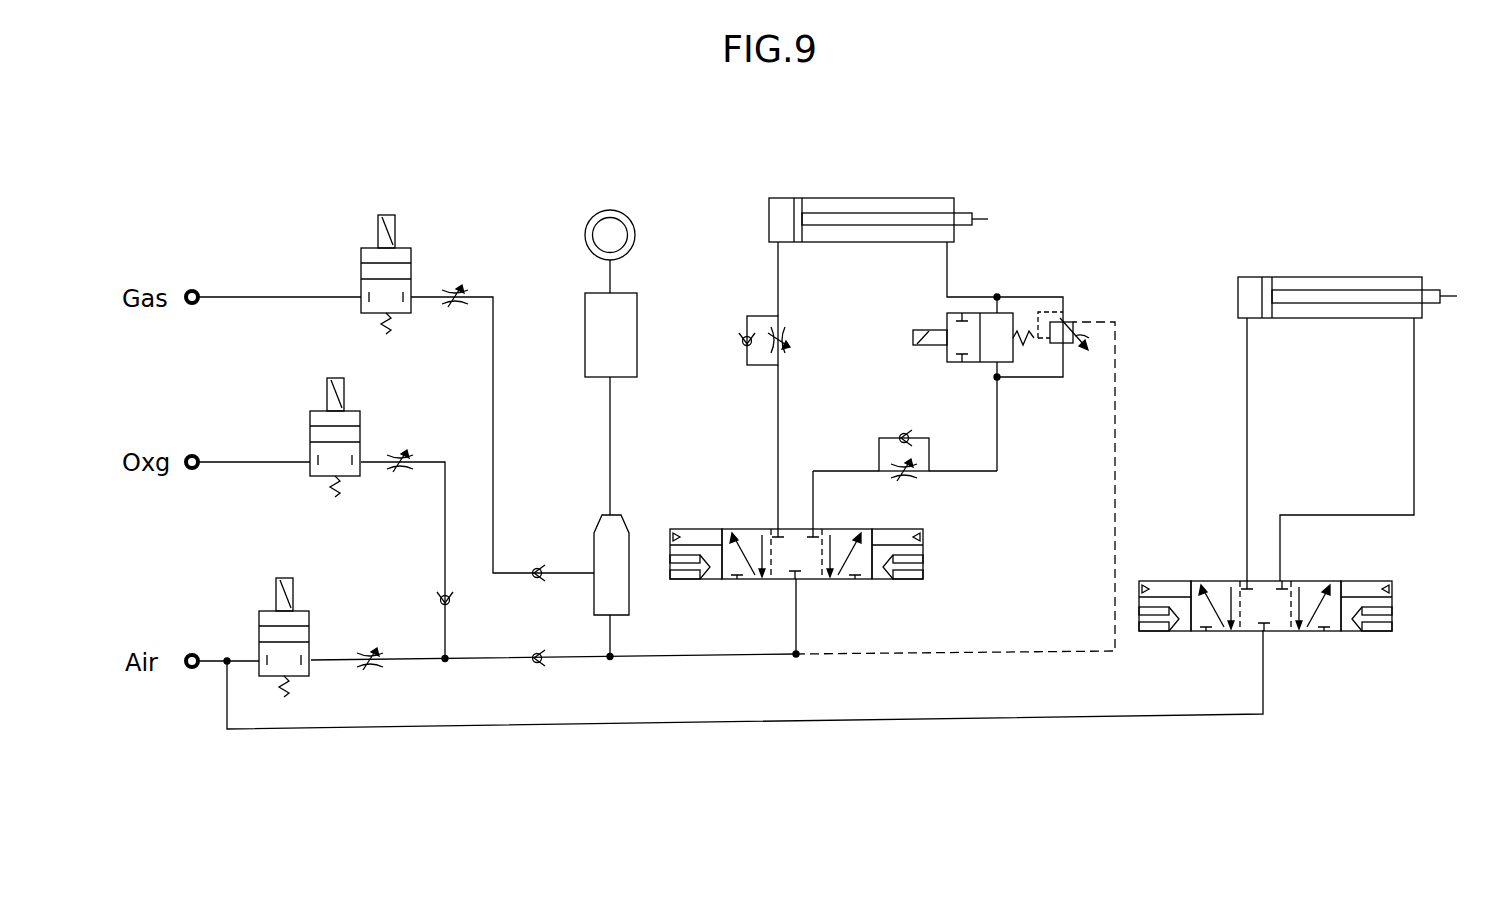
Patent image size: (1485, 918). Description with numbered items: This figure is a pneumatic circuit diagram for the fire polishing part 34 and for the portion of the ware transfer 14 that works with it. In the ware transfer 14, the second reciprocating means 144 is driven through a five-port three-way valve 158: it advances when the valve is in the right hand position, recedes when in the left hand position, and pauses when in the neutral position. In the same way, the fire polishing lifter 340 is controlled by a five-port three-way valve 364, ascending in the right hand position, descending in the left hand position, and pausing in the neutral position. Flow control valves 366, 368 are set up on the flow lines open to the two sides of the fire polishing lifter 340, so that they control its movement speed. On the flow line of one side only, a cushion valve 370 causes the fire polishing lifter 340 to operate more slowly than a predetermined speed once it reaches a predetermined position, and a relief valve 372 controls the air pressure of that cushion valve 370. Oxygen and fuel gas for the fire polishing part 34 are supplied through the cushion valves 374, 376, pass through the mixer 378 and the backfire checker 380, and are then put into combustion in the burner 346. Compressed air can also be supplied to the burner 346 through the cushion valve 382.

The ware transfer 14 is at (1436, 244).
The fire polishing part 34 is at (1100, 228).
The second reciprocating means 144 is at (1330, 277).
The 5-port 3-way valve 158 is at (1181, 581).
The fire polishing lifter 340 is at (872, 198).
The burner 346 is at (636, 235).
The 5-port 3-way valve 364 is at (737, 529).
The flow control valve 366 is at (755, 316).
The flow control valve 368 is at (879, 447).
The cushion valve 370 is at (947, 316).
The relief valve 372 is at (1072, 322).
The cushion valve 374 is at (412, 255).
The cushion valve 376 is at (361, 420).
The mixer 378 is at (594, 540).
The backfire checker 380 is at (637, 333).
The cushion valve 382 is at (311, 618).